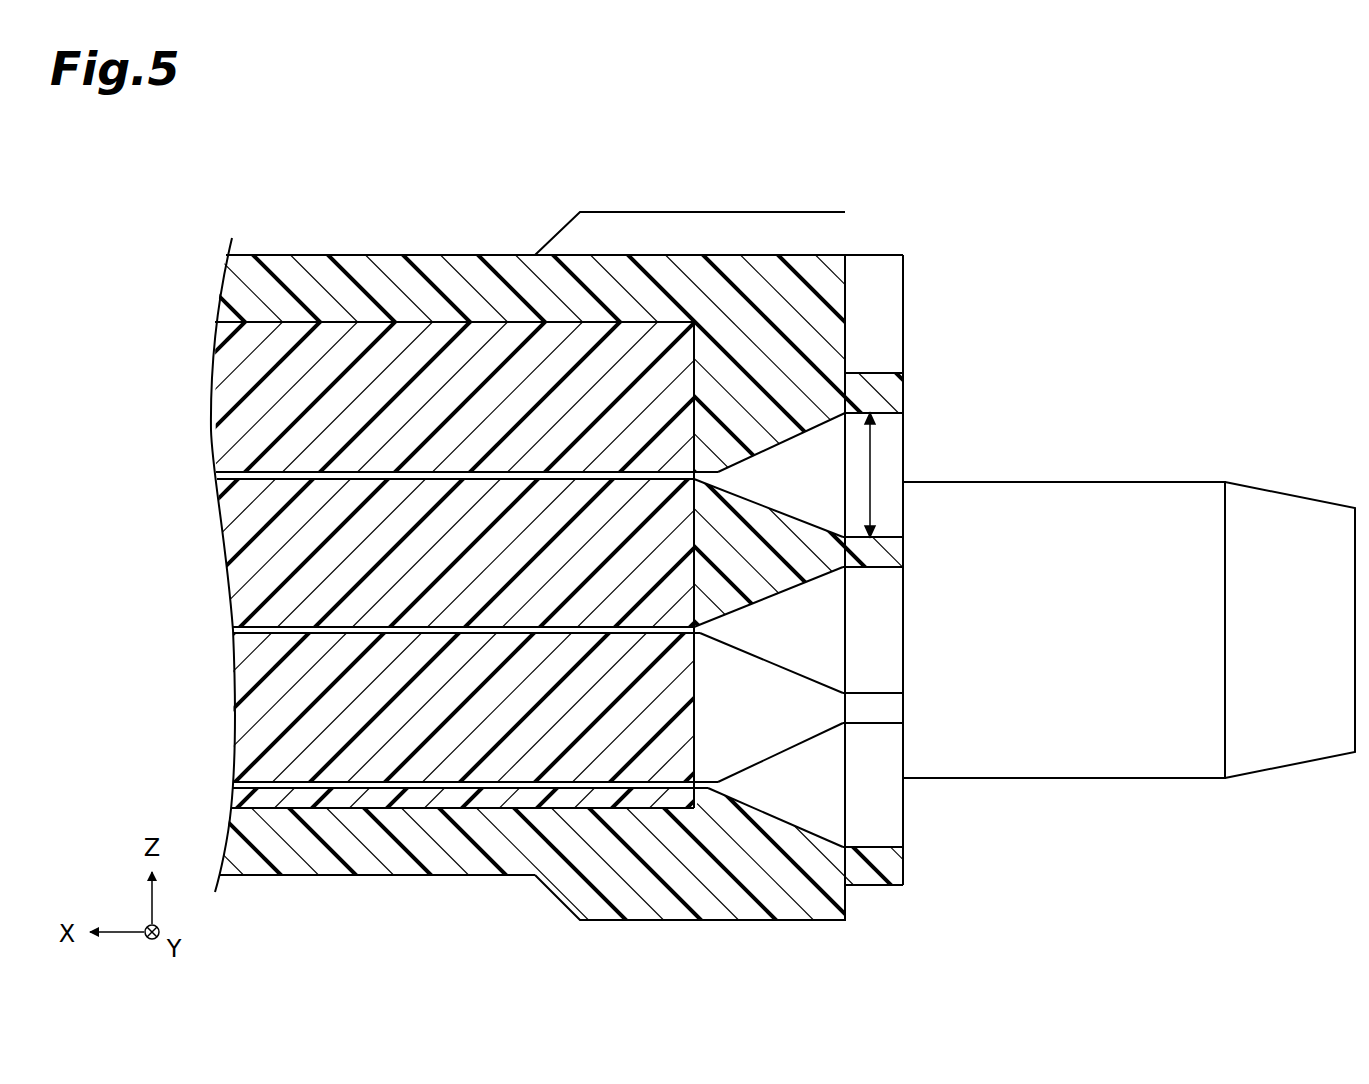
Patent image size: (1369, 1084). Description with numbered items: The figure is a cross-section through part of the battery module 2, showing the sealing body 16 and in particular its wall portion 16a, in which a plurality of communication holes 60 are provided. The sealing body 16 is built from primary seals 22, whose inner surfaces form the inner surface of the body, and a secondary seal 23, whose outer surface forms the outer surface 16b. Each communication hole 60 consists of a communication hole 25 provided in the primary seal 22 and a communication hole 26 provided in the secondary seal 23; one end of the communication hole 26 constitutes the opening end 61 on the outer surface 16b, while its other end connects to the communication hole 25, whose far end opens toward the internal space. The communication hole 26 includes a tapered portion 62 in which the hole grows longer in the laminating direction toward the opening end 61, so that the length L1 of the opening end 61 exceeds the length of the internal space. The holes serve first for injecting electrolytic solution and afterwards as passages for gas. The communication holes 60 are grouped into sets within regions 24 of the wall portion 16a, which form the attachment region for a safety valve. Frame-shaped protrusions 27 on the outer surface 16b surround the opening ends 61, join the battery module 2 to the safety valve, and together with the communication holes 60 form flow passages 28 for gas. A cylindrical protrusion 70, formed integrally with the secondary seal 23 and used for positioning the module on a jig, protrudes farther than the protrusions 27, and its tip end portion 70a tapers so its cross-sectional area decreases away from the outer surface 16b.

The battery module 2 is at (966, 204).
The sealing body 16 is at (499, 248).
The wall portion 16a is at (855, 903).
The outer surface 16b is at (845, 310).
The primary seal 22 is at (315, 398).
The secondary seal 23 is at (427, 255).
The region 24 is at (845, 351).
The communication hole 25 is at (608, 470).
The communication hole 26 is at (762, 445).
The protrusion 27 is at (908, 388).
The flow passage 28 is at (873, 750).
The communication hole 60 is at (607, 153).
The opening end 61 is at (845, 693).
The tapered portion 62 is at (808, 820).
The protrusion 70 is at (1098, 482).
The tip end portion 70a is at (1274, 492).
The length of opening end L1 is at (870, 455).